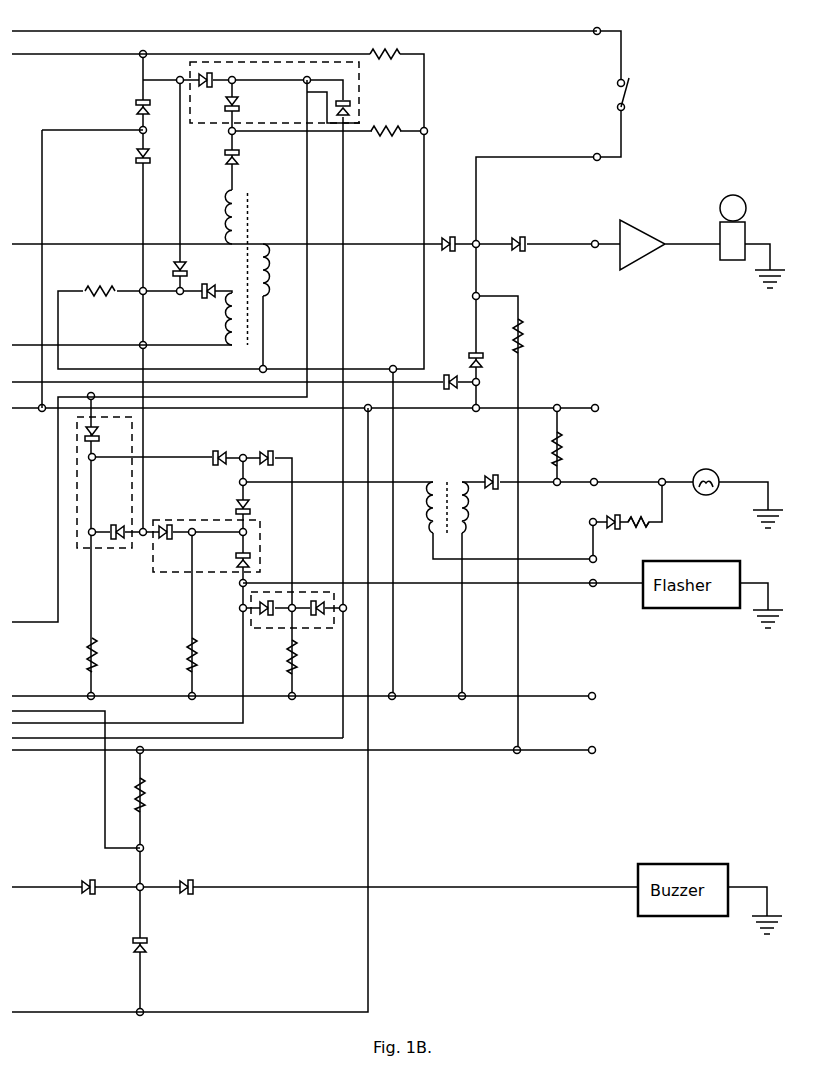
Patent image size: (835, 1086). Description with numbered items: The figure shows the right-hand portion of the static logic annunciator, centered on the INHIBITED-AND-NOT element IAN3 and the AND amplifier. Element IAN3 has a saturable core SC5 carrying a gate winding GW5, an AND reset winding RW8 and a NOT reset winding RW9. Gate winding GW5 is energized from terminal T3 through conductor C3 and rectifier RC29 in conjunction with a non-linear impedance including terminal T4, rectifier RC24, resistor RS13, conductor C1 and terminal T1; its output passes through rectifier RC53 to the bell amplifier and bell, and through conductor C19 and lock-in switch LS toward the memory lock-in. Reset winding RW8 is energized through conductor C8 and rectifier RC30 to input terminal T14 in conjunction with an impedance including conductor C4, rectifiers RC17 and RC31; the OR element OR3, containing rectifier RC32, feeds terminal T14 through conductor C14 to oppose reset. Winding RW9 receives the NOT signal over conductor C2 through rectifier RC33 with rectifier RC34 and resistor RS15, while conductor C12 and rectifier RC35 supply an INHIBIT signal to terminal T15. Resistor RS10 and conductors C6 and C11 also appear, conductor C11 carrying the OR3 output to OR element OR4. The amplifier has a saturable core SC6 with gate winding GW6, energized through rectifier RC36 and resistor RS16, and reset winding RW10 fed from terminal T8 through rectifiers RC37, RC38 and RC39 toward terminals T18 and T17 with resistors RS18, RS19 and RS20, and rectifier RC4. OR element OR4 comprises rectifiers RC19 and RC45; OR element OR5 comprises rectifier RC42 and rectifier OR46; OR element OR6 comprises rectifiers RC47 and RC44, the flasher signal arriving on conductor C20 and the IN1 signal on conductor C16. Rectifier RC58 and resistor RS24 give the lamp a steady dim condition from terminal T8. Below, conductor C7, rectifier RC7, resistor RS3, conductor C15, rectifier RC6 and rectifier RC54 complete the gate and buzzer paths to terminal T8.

The conductor C19 is at (161, 31).
The conductor C12 is at (61, 54).
The resistor RS10 is at (401, 54).
The static INHIBITED-AND-NOT element IAN3 is at (485, 104).
The lock-in switch LS is at (631, 82).
The conductor C14 is at (188, 80).
The rectifier RC17 is at (136, 108).
The rectifier RC31 is at (230, 113).
The static OR element OR3 is at (291, 97).
The rectifier RC32 is at (351, 106).
The input terminal T14 is at (229, 131).
The rectifier RC30 is at (238, 153).
The rectifier RC34 is at (136, 157).
The conductor C4 is at (42, 199).
The saturable core SC5 is at (250, 191).
The AND reset winding RW8 is at (226, 216).
The gate winding GW5 is at (262, 278).
The NOT reset winding RW9 is at (227, 330).
The rectifier RC29 is at (462, 226).
The rectifier RC53 is at (524, 240).
The conductor C8 is at (107, 244).
The rectifier RC35 is at (202, 269).
The resistor RS15 is at (100, 284).
The INHIBIT input terminal T15 is at (178, 294).
The rectifier RC33 is at (213, 298).
The NOT input signal conductor C2 is at (116, 344).
The conductor C11 is at (307, 338).
The resistor RS13 is at (523, 342).
The rectifier RC24 is at (466, 363).
The conductor C6 is at (37, 381).
The rectifier RC4 is at (450, 389).
The common terminal T4 is at (591, 405).
The rectifier RC19 is at (85, 435).
The AND input terminal T17 is at (93, 456).
The static OR element OR4 is at (128, 488).
The rectifier RC39 is at (220, 445).
The rectifier RC38 is at (260, 446).
The rectifier RC37 is at (238, 496).
The rectifier RC42 is at (159, 518).
The AND input terminal T18 is at (245, 530).
The static OR element OR5 is at (230, 556).
The rectifier RC45 is at (118, 542).
The rectifier OR46 is at (221, 586).
The rectifier RC47 is at (260, 614).
The rectifier RC44 is at (322, 598).
The static OR element OR6 is at (296, 635).
The resistor RS20 is at (99, 645).
The resistor RS18 is at (185, 659).
The resistor RS19 is at (291, 674).
The saturable core SC6 is at (442, 470).
The reset winding RW10 is at (432, 548).
The gate winding GW6 is at (464, 515).
The rectifier RC36 is at (493, 474).
The resistor RS16 is at (559, 450).
The rectifier RC58 is at (605, 516).
The resistor RS24 is at (641, 528).
The output terminal T8 is at (598, 558).
The conductor C20 is at (435, 585).
The conductor C3 is at (437, 693).
The terminal T3 is at (589, 692).
The conductor C16 is at (342, 717).
The conductor C1 is at (440, 746).
The terminal T1 is at (590, 747).
The conductor C15 is at (104, 790).
The resistor RS3 is at (146, 793).
The conductor C7 is at (367, 848).
The rectifier RC6 is at (95, 880).
The rectifier RC54 is at (181, 881).
The rectifier RC7 is at (148, 947).